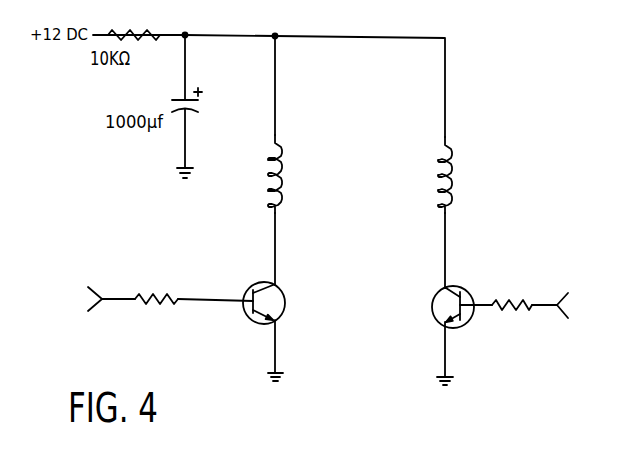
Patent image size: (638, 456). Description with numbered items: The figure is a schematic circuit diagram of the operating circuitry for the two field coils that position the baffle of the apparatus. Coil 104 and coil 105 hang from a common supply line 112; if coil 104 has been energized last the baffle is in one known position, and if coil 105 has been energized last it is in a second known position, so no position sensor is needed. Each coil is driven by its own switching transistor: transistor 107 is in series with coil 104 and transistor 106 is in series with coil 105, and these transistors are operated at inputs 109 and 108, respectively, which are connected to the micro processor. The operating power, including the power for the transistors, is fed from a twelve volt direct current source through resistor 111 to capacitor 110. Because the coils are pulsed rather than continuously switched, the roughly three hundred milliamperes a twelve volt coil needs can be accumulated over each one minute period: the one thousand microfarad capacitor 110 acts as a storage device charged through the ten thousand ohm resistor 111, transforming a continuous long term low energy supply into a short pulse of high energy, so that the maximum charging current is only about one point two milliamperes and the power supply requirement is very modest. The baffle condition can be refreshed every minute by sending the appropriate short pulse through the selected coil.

The coil 104 is at (283, 165).
The coil 105 is at (449, 157).
The switching transistor 106 is at (449, 289).
The switching transistor 107 is at (265, 283).
The input 108 is at (562, 299).
The input 109 is at (100, 287).
The capacitor 110 is at (203, 105).
The resistor 111 is at (148, 31).
The supply voltage line 112 is at (372, 0).